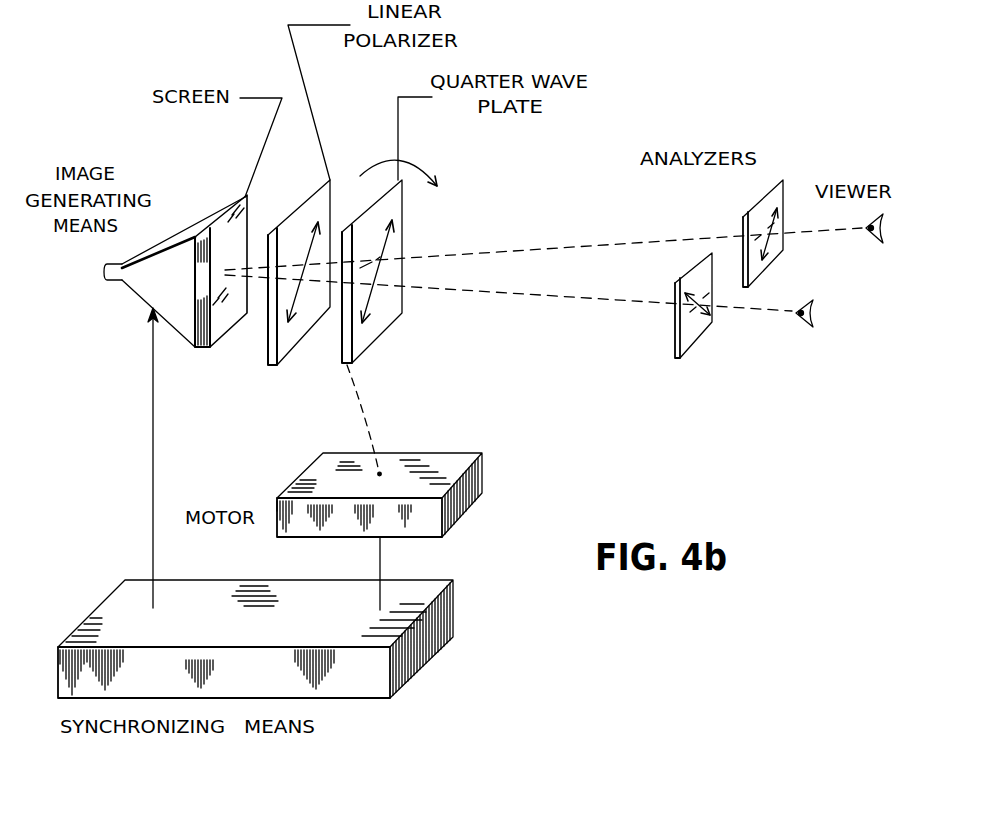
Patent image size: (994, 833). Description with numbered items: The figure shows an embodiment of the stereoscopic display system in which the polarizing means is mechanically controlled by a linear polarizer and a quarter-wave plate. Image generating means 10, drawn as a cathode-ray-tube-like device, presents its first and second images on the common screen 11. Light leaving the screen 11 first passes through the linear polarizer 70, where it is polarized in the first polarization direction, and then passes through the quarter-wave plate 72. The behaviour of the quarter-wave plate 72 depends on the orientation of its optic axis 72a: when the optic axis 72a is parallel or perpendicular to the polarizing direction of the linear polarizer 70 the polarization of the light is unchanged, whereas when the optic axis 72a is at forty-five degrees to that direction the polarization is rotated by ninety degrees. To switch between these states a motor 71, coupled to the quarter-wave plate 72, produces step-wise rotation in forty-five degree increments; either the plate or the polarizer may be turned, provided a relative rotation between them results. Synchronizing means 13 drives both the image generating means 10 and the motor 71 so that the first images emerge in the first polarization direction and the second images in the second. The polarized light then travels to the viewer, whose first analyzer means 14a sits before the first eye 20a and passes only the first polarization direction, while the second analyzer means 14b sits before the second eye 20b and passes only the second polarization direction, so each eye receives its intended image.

The image generating means 10 is at (145, 283).
The common screen 11 is at (200, 350).
The linear polarizer 70 is at (305, 338).
The quarter-wave plate 72 is at (384, 333).
The optic axis 72a is at (388, 246).
The motor 71 is at (482, 483).
The synchronizing means 13 is at (428, 660).
The first analyzer means 14a is at (777, 266).
The second analyzer means 14b is at (700, 340).
The first eye 20a is at (885, 236).
The second eye 20b is at (812, 308).